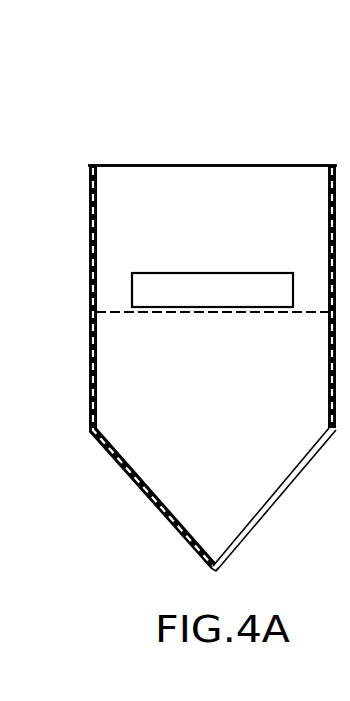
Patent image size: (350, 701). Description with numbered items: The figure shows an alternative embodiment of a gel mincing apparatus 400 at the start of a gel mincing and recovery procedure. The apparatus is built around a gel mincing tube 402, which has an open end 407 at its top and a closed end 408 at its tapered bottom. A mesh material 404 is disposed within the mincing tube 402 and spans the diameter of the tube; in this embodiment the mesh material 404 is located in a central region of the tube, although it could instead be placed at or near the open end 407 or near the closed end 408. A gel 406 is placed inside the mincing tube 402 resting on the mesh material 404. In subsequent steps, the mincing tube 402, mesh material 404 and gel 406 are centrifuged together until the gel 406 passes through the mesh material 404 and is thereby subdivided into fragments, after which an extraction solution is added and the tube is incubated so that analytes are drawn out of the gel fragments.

The gel mincing apparatus 400 is at (178, 104).
The gel mincing tube 402 is at (138, 500).
The mesh material 404 is at (230, 317).
The gel 406 is at (224, 290).
The open end 407 is at (233, 165).
The closed end 408 is at (240, 552).